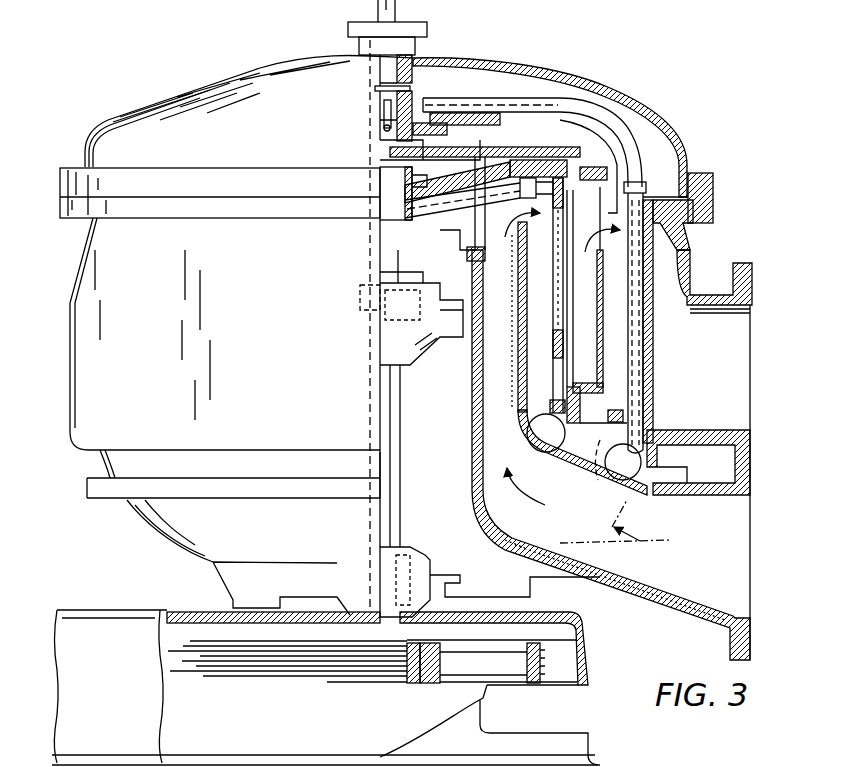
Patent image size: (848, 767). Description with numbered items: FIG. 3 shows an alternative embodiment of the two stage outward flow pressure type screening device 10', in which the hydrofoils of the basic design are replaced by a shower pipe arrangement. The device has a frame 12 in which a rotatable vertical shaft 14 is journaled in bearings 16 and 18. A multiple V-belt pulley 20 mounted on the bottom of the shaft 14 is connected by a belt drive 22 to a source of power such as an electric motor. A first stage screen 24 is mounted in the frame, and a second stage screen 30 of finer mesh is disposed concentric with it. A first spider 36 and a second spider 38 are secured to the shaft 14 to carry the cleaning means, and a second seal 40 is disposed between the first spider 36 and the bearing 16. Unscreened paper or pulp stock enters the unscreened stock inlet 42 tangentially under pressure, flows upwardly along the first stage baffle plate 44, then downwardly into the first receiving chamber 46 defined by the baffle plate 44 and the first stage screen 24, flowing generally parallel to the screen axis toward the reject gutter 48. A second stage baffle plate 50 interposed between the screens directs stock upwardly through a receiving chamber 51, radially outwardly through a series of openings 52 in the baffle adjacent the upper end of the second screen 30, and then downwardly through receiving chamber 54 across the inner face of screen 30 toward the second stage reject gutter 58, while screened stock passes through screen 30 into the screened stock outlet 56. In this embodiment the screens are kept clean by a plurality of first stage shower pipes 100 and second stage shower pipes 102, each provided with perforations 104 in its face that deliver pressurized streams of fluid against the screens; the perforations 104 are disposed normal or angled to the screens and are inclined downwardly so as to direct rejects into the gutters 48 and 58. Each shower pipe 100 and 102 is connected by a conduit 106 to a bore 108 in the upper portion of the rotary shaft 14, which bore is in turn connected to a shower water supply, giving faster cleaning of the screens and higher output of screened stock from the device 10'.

The screening device 10' is at (550, 116).
The frame 12 is at (590, 676).
The rotatable vertical shaft 14 is at (392, 445).
The bearing 16 is at (365, 325).
The bearing 18 is at (412, 550).
The multiple V-belt pulley 20 is at (430, 688).
The belt drive 22 is at (212, 675).
The first stage screen 24 is at (556, 295).
The second stage screen 30 is at (647, 410).
The first spider 36 is at (452, 180).
The second spider 38 is at (565, 130).
The second seal 40 is at (375, 253).
The unscreened stock inlet 42 is at (773, 555).
The first stage baffle plate 44 is at (516, 430).
The first receiving chamber 46 is at (517, 305).
The reject gutter 48 is at (558, 443).
The second stage baffle plate 50 is at (603, 395).
The receiving chamber 51 is at (578, 320).
The openings 52 is at (576, 235).
The receiving chamber 54 is at (622, 325).
The screened stock outlet 56 is at (775, 367).
The second stage reject gutter 58 is at (635, 472).
The first stage shower pipes 100 is at (555, 322).
The second stage shower pipes 102 is at (640, 362).
The perforations 104 is at (684, 235).
The conduit 106 is at (478, 110).
The bore 108 is at (384, 110).